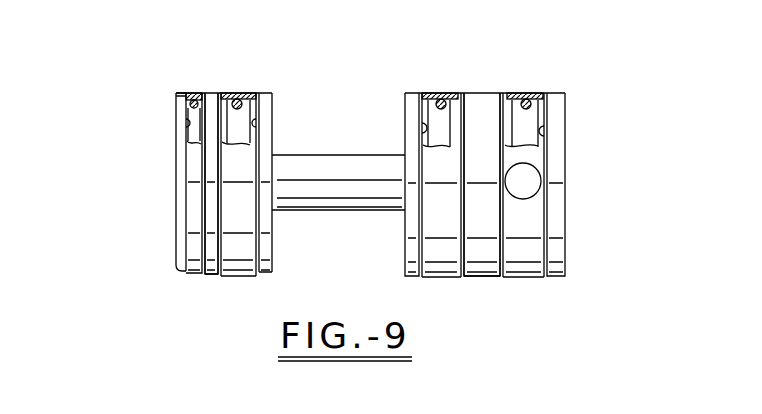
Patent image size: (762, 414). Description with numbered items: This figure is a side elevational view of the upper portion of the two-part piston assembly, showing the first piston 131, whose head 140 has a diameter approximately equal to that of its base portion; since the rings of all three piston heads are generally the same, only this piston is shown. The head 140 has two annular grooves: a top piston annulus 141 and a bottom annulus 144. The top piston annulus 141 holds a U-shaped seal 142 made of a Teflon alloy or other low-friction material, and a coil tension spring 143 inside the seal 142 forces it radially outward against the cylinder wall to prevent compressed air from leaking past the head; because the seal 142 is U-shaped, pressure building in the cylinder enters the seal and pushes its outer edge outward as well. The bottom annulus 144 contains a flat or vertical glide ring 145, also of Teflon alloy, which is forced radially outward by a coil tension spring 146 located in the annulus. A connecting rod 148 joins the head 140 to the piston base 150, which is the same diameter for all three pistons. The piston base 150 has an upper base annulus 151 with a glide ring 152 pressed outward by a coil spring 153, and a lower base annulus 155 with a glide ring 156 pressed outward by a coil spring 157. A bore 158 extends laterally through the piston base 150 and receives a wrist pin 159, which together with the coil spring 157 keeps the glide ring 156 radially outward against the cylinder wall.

The first piston 131 is at (567, 160).
The head 140 is at (175, 237).
The top piston annulus 141 is at (186, 125).
The seal 142 is at (189, 95).
The coil tension spring 143 is at (180, 100).
The bottom annulus 144 is at (256, 122).
The glide ring 145 is at (238, 102).
The coil tension spring 146 is at (233, 93).
The connecting rod 148 is at (337, 202).
The piston base 150 is at (565, 238).
The upper base annulus 151 is at (420, 129).
The glide ring 152 is at (427, 93).
The coil spring 153 is at (438, 93).
The lower base annulus 155 is at (546, 130).
The glide ring 156 is at (530, 95).
The coil spring 157 is at (520, 95).
The bore 158 is at (468, 177).
The wrist pin 159 is at (531, 190).